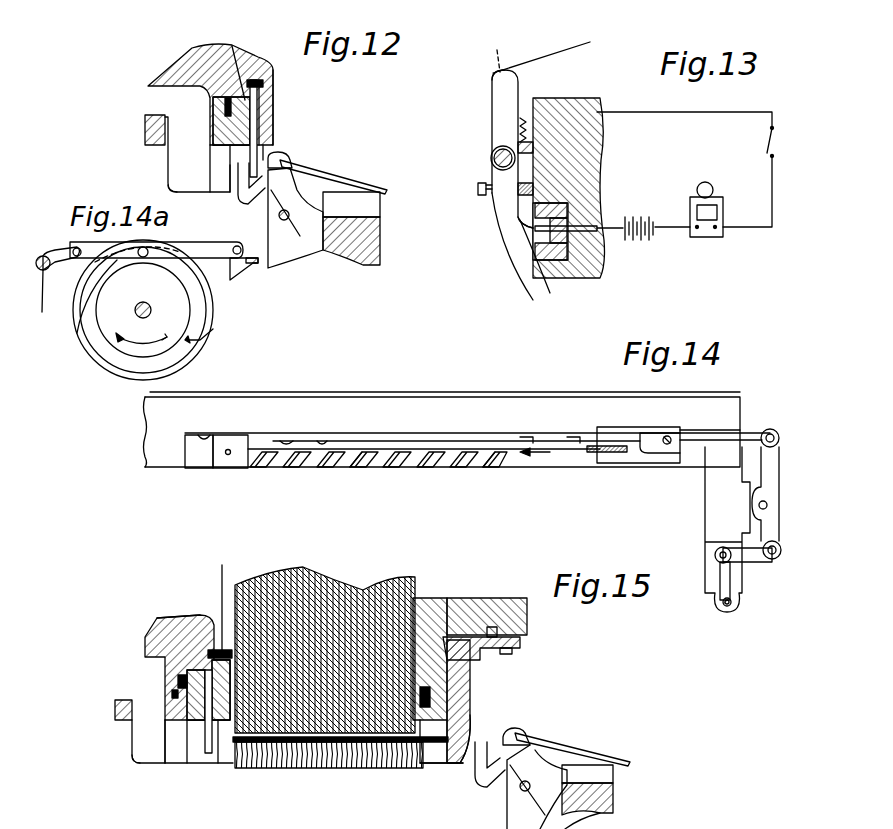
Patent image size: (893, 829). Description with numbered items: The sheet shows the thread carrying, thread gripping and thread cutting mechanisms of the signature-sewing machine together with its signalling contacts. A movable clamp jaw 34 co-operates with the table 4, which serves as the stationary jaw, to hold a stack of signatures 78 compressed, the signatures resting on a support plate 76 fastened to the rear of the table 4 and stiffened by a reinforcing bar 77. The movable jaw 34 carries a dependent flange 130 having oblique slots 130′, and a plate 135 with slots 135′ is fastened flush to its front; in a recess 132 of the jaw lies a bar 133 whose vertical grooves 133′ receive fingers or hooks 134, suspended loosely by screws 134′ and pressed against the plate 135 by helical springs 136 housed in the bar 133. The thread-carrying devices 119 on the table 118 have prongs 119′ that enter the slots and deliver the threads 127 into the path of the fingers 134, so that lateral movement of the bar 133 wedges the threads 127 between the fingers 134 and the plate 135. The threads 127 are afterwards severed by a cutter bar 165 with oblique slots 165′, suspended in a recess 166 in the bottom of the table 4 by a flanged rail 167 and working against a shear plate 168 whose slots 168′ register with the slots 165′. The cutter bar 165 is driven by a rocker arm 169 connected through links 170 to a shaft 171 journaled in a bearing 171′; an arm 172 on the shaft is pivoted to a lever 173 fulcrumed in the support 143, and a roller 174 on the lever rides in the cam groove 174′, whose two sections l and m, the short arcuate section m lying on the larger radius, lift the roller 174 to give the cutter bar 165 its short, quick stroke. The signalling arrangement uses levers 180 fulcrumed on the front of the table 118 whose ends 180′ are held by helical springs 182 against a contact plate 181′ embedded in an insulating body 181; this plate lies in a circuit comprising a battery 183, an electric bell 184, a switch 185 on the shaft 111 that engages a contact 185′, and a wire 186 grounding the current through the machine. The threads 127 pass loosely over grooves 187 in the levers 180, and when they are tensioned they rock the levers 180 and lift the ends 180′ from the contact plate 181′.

In FIG. 14, the table 4 is at (350, 401).
In FIG. 15, the table 4 is at (482, 598).
In FIG. 12, the movable clamp jaw 34 is at (206, 52).
In FIG. 15, the movable clamp jaw 34 is at (178, 615).
In FIG. 12, the plate 76 is at (170, 192).
In FIG. 15, the plate 76 is at (128, 762).
In FIG. 12, the reinforcing bar 77 is at (145, 133).
In FIG. 15, the reinforcing bar 77 is at (115, 712).
In FIG. 15, the signatures 78 is at (335, 585).
In FIG. 14A, the shaft 111 is at (150, 305).
In FIG. 12, the table 118 is at (370, 233).
In FIG. 13, the table 118 is at (590, 166).
In FIG. 15, the table 118 is at (610, 796).
In FIG. 12, the thread-carrying devices 119 is at (266, 215).
In FIG. 12, the prong 119′ is at (242, 200).
In FIG. 15, the prong 119′ is at (478, 792).
In FIG. 12, the threads 127 is at (380, 191).
In FIG. 13, the threads 127 is at (572, 50).
In FIG. 15, the threads 127 is at (622, 760).
In FIG. 12, the dependent flange 130 is at (213, 135).
In FIG. 15, the dependent flange 130 is at (170, 690).
In FIG. 12, the oblique slots 130′ is at (222, 170).
In FIG. 15, the oblique slots 130′ is at (178, 752).
In FIG. 12, the recess 132 is at (245, 60).
In FIG. 15, the recess 132 is at (195, 640).
In FIG. 12, the bar 133 is at (235, 100).
In FIG. 15, the bar 133 is at (185, 665).
In FIG. 12, the vertical grooves 133′ is at (277, 127).
In FIG. 15, the vertical grooves 133′ is at (212, 725).
In FIG. 12, the fingers 134 is at (263, 98).
In FIG. 15, the fingers 134 is at (208, 735).
In FIG. 12, the screws 134′ is at (225, 106).
In FIG. 15, the screws 134′ is at (178, 680).
In FIG. 12, the plate 135 is at (273, 113).
In FIG. 15, the plate 135 is at (229, 606).
In FIG. 12, the slots 135′ is at (273, 150).
In FIG. 15, the slots 135′ is at (227, 758).
In FIG. 15, the helical springs 136 is at (172, 694).
In FIG. 14A, the support 143 is at (250, 270).
In FIG. 14, the cutter bar 165 is at (575, 455).
In FIG. 15, the cutter bar 165 is at (470, 670).
In FIG. 14, the oblique slots 165′ is at (490, 468).
In FIG. 15, the oblique slots 165′ is at (465, 730).
In FIG. 14, the recess 166 is at (210, 440).
In FIG. 15, the recess 166 is at (440, 598).
In FIG. 14, the flanged rail 167 is at (380, 441).
In FIG. 15, the flanged rail 167 is at (520, 644).
In FIG. 14, the shear plate 168 is at (228, 458).
In FIG. 15, the shear plate 168 is at (470, 700).
In FIG. 14, the oblique slots 168′ is at (380, 468).
In FIG. 15, the oblique slots 168′ is at (460, 763).
In FIG. 14, the rocker arm 169 is at (775, 463).
In FIG. 14, the links 170 is at (748, 565).
In FIG. 14A, the shaft 171 is at (43, 305).
In FIG. 14, the shaft 171 is at (740, 608).
In FIG. 14, the bearing 171′ is at (728, 610).
In FIG. 14A, the arm 172 is at (52, 270).
In FIG. 14A, the lever 173 is at (176, 250).
In FIG. 14A, the roller 174 is at (214, 318).
In FIG. 14A, the cam groove 174′ is at (192, 302).
In FIG. 13, the levers 180 is at (500, 125).
In FIG. 13, the lever ends 180′ is at (528, 232).
In FIG. 13, the insulating body 181 is at (597, 280).
In FIG. 13, the contact plate 181′ is at (530, 282).
In FIG. 13, the helical springs 182 is at (525, 115).
In FIG. 13, the battery 183 is at (645, 240).
In FIG. 13, the electric bell 184 is at (715, 237).
In FIG. 13, the switch 185 is at (773, 148).
In FIG. 13, the contact 185′ is at (773, 128).
In FIG. 13, the wire 186 is at (700, 112).
In FIG. 13, the grooves 187 is at (506, 53).
In FIG. 14A, the cam groove section m is at (77, 334).
In FIG. 14A, the cam groove section l is at (205, 346).